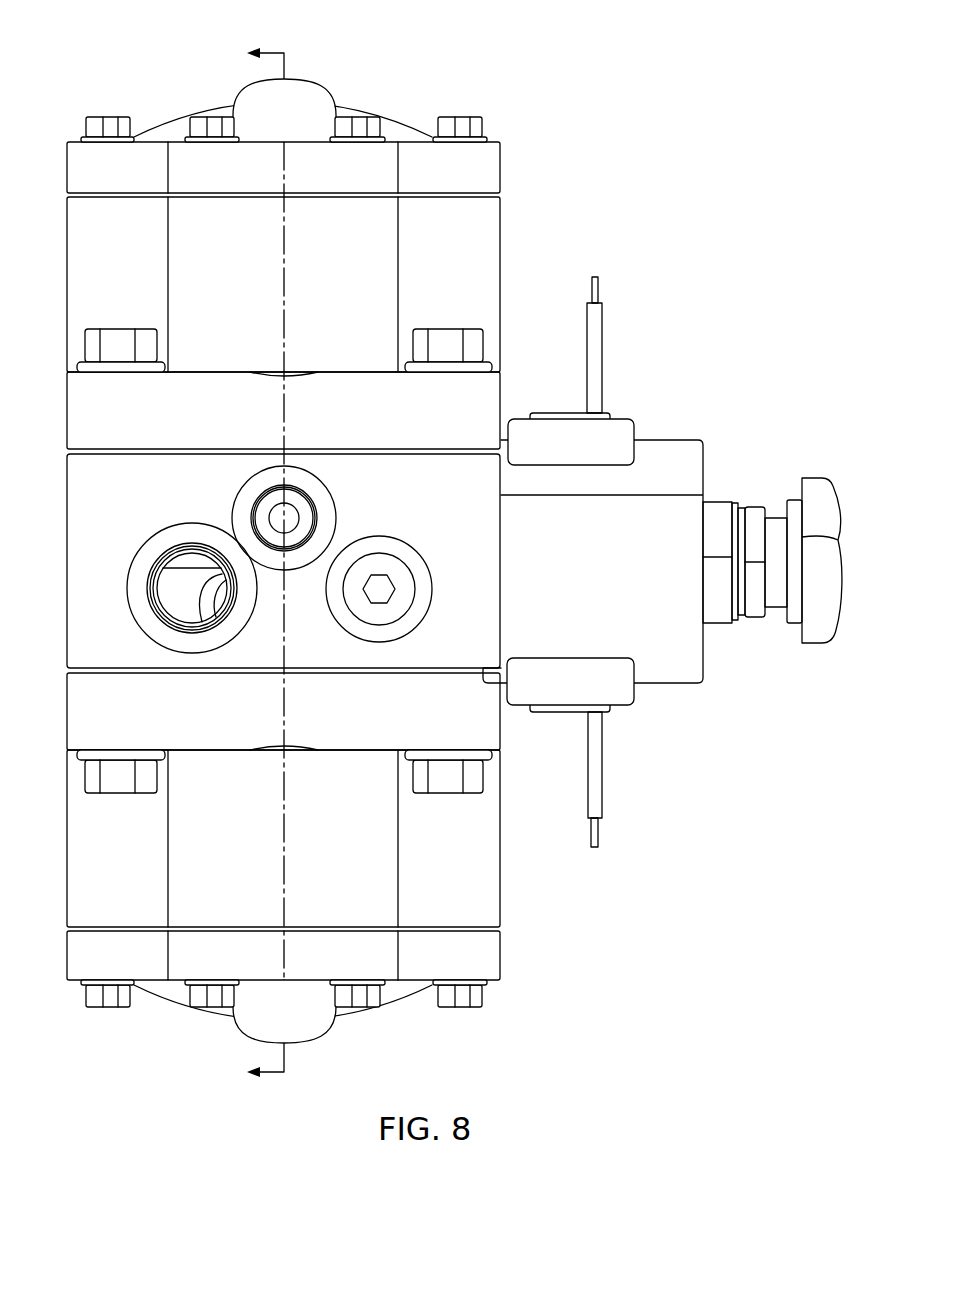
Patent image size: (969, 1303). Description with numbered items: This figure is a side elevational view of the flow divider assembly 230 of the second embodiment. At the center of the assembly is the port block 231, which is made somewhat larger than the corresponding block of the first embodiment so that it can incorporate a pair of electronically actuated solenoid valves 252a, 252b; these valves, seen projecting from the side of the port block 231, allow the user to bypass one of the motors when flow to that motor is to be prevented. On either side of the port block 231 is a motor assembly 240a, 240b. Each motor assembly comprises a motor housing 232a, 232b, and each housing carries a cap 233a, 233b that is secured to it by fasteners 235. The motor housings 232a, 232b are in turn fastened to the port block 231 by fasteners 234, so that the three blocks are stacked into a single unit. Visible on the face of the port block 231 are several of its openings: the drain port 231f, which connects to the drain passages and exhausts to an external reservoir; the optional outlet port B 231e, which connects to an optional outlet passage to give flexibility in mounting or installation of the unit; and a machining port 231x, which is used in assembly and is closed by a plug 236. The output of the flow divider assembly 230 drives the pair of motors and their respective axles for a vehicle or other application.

The flow divider assembly 230 is at (750, 140).
The port block 231 is at (165, 499).
The optional outlet port B 231e is at (165, 555).
The drain port 231f is at (312, 498).
The machining ports 231x is at (413, 590).
The motor housing 232a is at (247, 292).
The motor housing 232b is at (247, 847).
The cap 233a is at (247, 177).
The cap 233b is at (247, 966).
The fasteners 234 is at (448, 327).
The fasteners 235 is at (463, 118).
The plugs 236 is at (387, 562).
The motor assembly 240a is at (552, 251).
The motor assembly 240b is at (552, 890).
The solenoid valve 252a is at (667, 440).
The solenoid valve 252b is at (665, 683).